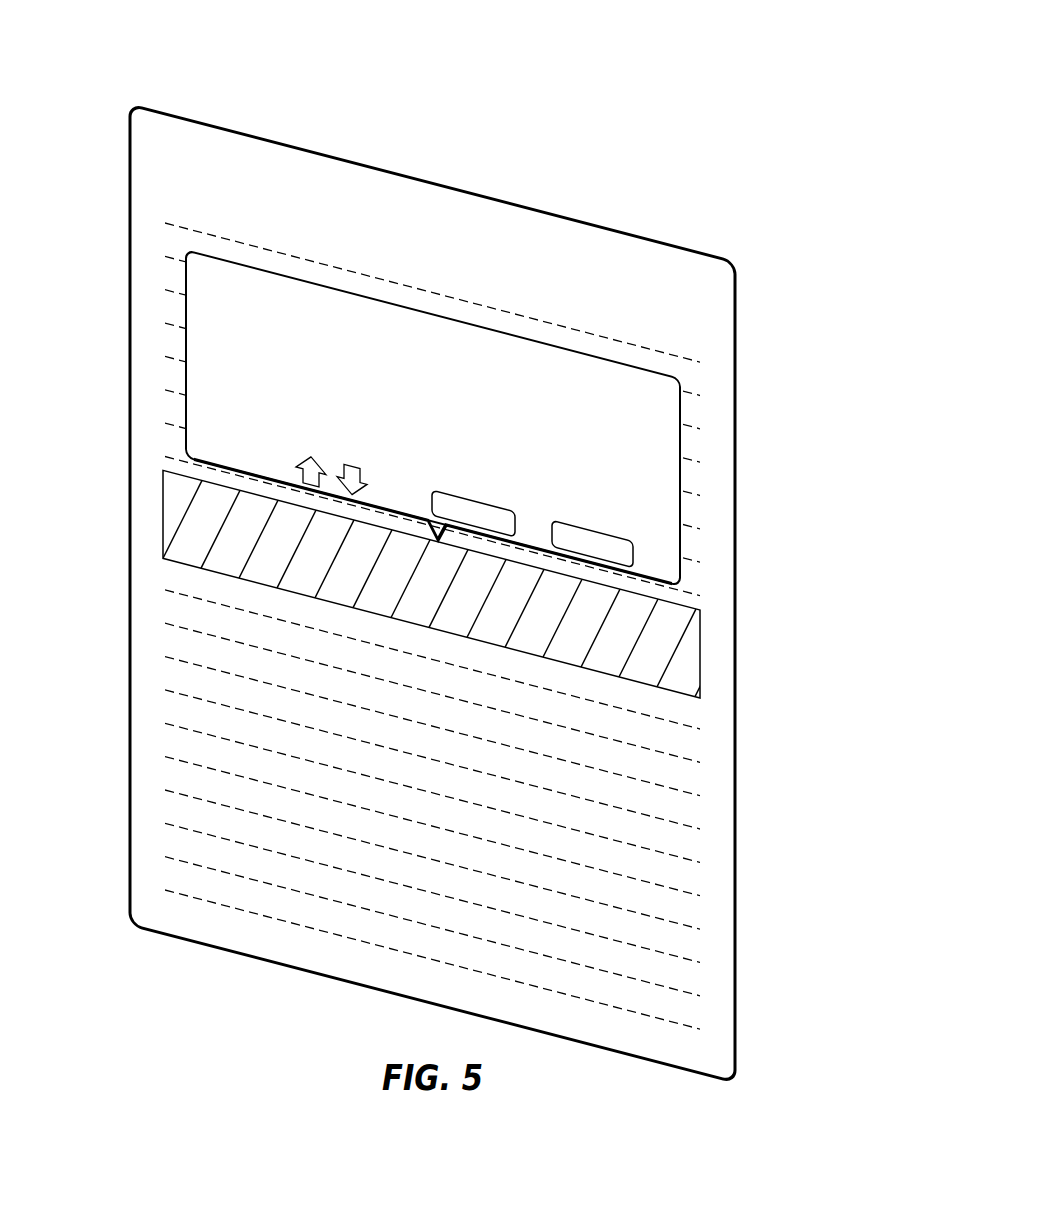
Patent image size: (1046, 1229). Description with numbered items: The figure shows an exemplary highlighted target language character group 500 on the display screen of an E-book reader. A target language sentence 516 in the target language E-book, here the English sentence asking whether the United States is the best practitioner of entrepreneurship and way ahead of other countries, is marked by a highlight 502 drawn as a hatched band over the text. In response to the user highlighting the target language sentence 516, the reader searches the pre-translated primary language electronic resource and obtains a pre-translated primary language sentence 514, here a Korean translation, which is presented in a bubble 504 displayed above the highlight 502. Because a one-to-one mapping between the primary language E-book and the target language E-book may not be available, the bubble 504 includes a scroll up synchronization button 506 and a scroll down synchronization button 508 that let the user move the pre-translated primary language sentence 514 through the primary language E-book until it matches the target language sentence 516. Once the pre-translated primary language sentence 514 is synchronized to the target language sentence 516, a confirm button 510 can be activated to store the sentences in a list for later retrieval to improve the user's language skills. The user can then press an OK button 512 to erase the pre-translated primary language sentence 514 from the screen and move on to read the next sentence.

The highlighted target language character group 500 is at (617, 48).
The highlight 502 is at (163, 502).
The bubble 504 is at (682, 441).
The scroll up synchronization button 506 is at (350, 468).
The scroll down synchronization button 508 is at (300, 476).
The confirm button 510 is at (515, 512).
The OK button 512 is at (633, 547).
The pre-translated primary language sentence 514 is at (538, 388).
The target language sentence 516 is at (248, 535).